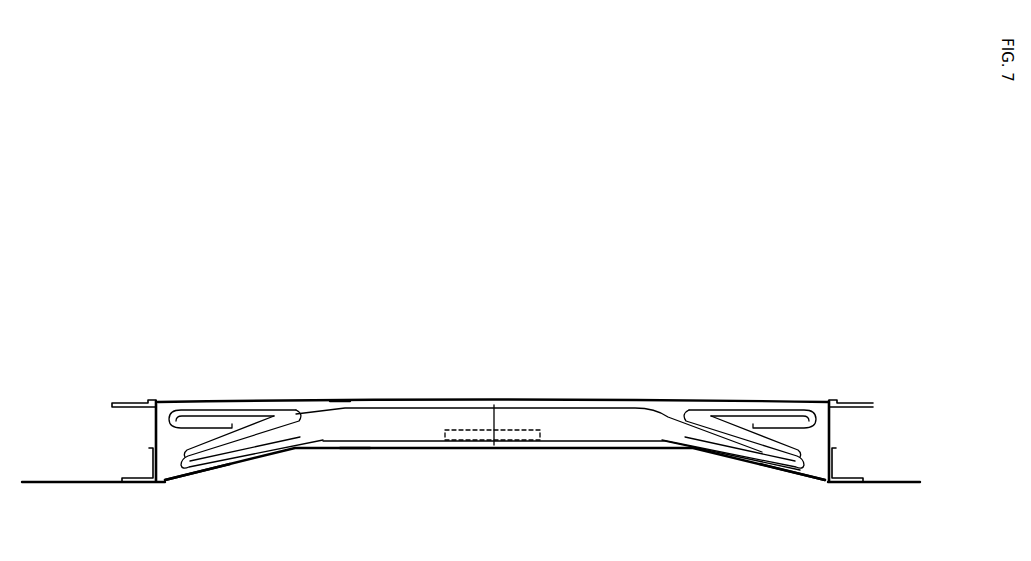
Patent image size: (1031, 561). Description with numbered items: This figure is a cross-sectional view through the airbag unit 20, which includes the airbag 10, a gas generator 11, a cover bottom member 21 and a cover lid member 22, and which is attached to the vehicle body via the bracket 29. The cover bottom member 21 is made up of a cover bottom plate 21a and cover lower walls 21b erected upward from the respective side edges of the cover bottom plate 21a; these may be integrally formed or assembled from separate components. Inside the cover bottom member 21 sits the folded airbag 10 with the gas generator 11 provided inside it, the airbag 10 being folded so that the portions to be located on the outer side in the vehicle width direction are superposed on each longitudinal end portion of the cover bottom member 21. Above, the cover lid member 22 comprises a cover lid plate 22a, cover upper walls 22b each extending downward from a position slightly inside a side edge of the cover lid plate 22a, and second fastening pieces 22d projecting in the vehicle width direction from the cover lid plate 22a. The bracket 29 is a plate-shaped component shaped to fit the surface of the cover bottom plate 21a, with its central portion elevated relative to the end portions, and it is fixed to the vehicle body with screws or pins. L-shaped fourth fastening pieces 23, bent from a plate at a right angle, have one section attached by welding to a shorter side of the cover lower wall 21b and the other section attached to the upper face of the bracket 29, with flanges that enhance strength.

The airbag 10 is at (661, 409).
The gas generator 11 is at (525, 441).
The airbag unit 20 is at (546, 390).
The cover bottom member 21 is at (394, 450).
The cover bottom plate 21a is at (352, 452).
The cover lower wall 21b is at (162, 460).
The cover lid member 22 is at (443, 399).
The cover lid plate 22a is at (339, 399).
The cover upper wall 22b is at (154, 421).
The second fastening piece 22d is at (111, 405).
The fourth fastening piece 23 is at (126, 477).
The bracket 29 is at (92, 484).